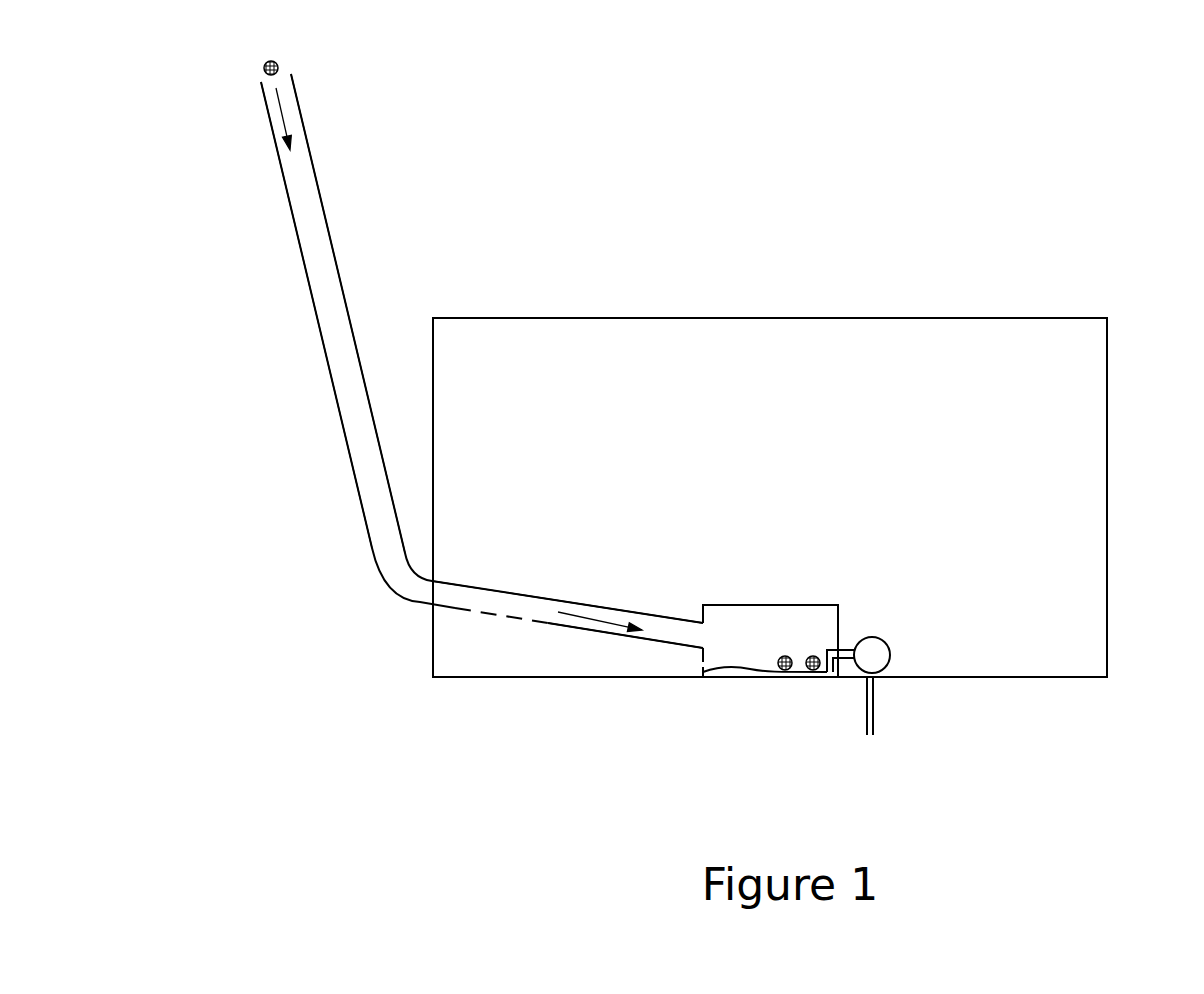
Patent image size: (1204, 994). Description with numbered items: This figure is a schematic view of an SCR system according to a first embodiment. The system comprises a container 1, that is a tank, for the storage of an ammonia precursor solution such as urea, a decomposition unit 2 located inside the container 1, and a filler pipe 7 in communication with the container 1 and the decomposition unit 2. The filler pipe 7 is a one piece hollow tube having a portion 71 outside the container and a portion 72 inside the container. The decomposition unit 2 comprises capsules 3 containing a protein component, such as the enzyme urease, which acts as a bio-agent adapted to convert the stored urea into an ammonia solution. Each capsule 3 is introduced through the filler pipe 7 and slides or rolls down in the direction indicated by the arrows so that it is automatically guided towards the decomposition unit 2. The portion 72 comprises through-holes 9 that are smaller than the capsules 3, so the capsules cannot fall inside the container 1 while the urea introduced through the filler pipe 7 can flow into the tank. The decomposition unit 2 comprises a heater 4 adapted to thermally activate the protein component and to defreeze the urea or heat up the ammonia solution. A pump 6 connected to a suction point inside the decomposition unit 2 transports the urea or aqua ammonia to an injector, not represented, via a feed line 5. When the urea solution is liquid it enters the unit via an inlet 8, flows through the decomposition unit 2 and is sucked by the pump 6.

The container 1 is at (1090, 443).
The decomposition unit 2 is at (740, 592).
The capsules 3 is at (309, 64).
The heater 4 is at (733, 689).
The feed line 5 is at (852, 716).
The pump 6 is at (900, 666).
The filler pipe 7 is at (375, 238).
The portion outside the container 71 is at (302, 317).
The portion inside the container 72 is at (579, 590).
The inlet 8 is at (686, 676).
The through-holes 9 is at (479, 637).